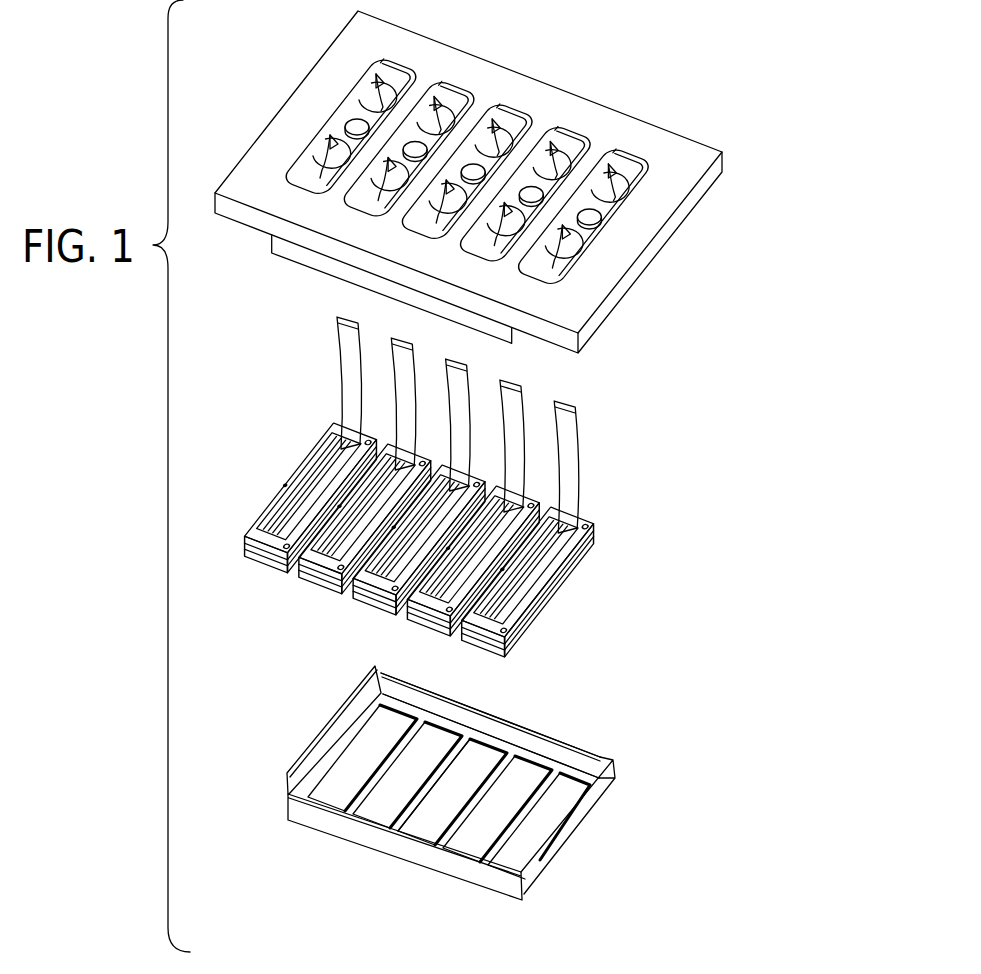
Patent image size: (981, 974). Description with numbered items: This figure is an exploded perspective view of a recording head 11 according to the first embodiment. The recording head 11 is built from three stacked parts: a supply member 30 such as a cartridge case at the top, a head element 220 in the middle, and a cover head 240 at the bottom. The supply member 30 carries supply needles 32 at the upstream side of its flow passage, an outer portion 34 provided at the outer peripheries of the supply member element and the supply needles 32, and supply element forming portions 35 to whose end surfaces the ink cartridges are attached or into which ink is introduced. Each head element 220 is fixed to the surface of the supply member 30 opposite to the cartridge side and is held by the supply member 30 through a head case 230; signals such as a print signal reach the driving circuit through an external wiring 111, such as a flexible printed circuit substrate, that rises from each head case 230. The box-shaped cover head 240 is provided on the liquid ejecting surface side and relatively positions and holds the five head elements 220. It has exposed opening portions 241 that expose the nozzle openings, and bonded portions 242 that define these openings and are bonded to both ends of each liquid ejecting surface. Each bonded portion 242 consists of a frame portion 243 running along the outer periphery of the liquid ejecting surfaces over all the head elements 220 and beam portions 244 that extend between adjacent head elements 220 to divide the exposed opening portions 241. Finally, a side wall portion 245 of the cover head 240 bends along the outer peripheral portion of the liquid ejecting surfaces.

The recording head 11 is at (843, 118).
The supply member 30 is at (742, 210).
The supply needle 32 is at (614, 176).
The outer portion 34 is at (537, 313).
The supply element forming portion 35 is at (578, 146).
The external wiring 111 is at (348, 360).
The head element 220 is at (648, 505).
The head case 230 is at (560, 550).
The cover head 240 is at (752, 703).
The exposed opening portion 241 is at (395, 768).
The bonded portion 242 is at (641, 670).
The frame portion 243 is at (480, 740).
The beam portion 244 is at (482, 793).
The side wall portion 245 is at (462, 873).